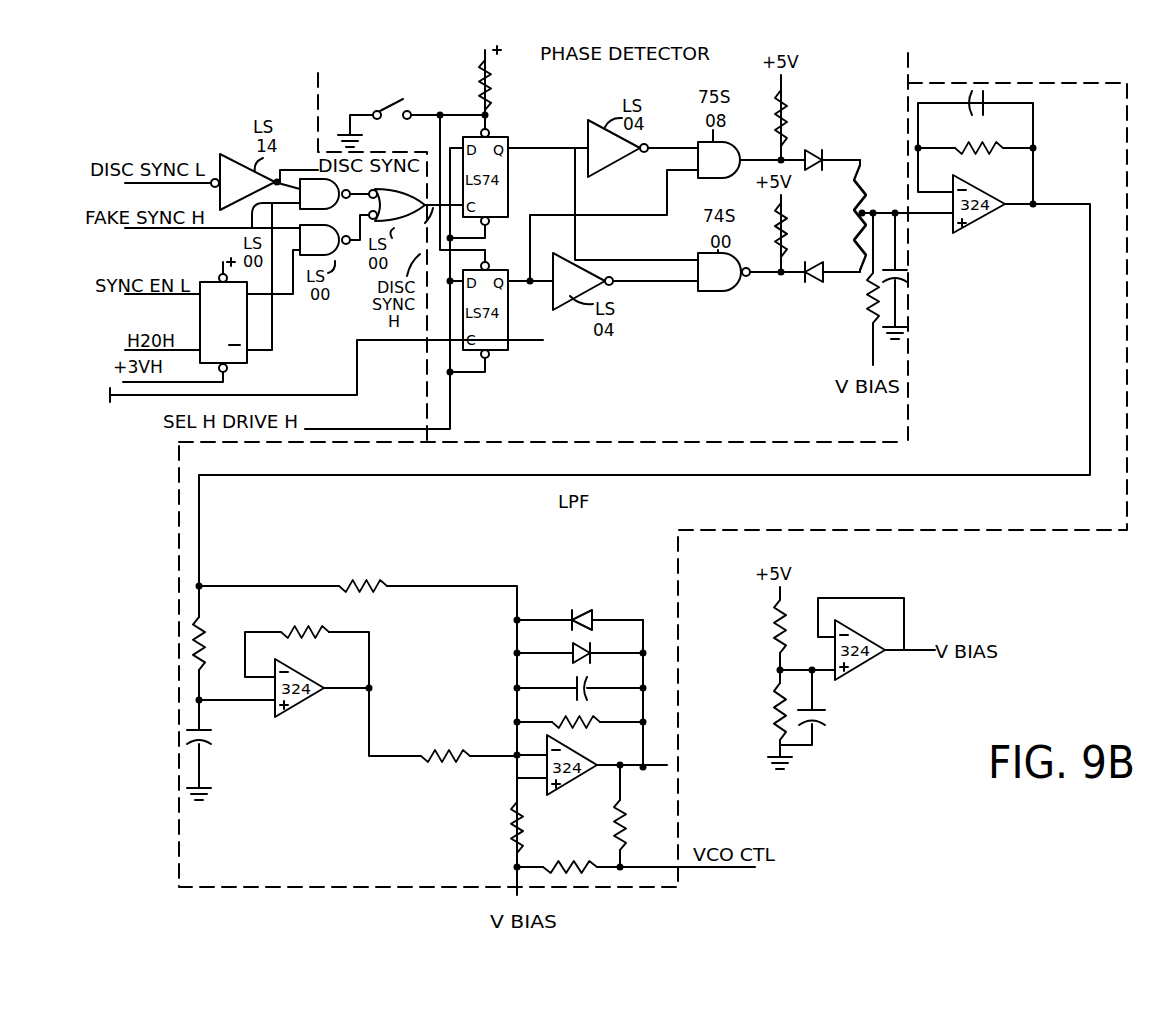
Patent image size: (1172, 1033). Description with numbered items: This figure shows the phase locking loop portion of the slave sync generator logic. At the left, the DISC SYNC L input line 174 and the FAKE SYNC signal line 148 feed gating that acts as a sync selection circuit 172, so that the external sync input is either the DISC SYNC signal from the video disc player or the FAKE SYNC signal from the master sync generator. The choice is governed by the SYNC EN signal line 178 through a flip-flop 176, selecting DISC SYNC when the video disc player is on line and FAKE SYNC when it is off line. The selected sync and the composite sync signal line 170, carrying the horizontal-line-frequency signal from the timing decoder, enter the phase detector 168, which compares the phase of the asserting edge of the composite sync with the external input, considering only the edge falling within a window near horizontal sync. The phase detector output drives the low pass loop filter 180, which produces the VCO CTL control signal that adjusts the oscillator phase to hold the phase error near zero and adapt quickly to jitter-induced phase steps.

The FAKE SYNC signal line 148 is at (165, 232).
The phase detector 168 is at (910, 68).
The composite sync signal line 170 is at (248, 394).
The disc sync selection circuit 172 is at (447, 200).
The disc sync signal input line 174 is at (177, 188).
The flip-flop LS74 176 is at (200, 320).
The SYNC EN signal line 178 is at (148, 298).
The low pass loop filter 180 is at (1062, 83).